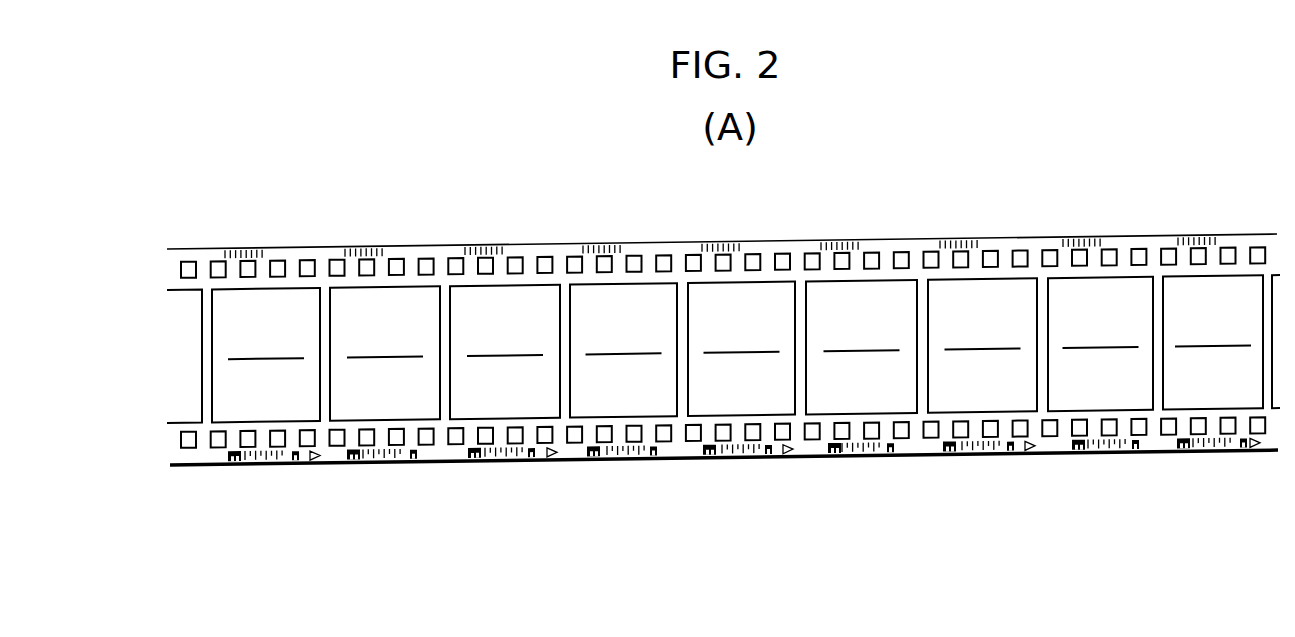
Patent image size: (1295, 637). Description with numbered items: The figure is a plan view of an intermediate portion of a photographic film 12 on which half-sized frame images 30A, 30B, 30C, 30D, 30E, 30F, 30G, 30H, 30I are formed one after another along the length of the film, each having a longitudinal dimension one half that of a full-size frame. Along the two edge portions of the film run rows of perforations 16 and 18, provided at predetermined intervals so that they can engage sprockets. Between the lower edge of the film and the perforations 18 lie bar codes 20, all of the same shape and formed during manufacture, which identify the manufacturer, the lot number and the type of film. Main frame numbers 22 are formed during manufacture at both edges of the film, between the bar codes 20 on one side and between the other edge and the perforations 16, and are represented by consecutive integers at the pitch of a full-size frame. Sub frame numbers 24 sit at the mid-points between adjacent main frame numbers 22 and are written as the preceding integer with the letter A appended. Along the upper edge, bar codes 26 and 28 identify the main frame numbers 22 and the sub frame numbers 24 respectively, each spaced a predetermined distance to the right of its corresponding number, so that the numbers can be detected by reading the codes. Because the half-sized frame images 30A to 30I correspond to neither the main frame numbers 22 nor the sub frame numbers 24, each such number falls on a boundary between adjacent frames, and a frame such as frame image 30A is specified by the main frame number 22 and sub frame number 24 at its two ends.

The photographic film 12 is at (1027, 248).
The perforations 16 is at (303, 268).
The perforations 18 is at (228, 463).
The bar codes 20 is at (263, 466).
The main frame numbers 22 is at (202, 243).
The sub frame numbers 24 is at (325, 471).
The bar codes 26 is at (247, 243).
The bar codes 28 is at (372, 243).
The frame image 30A is at (266, 355).
The frame image 30B is at (385, 353).
The frame image 30C is at (505, 352).
The frame image 30D is at (623, 350).
The frame image 30E is at (741, 349).
The frame image 30F is at (861, 347).
The frame image 30G is at (982, 345).
The frame image 30H is at (1100, 344).
The frame image 30I is at (1213, 342).